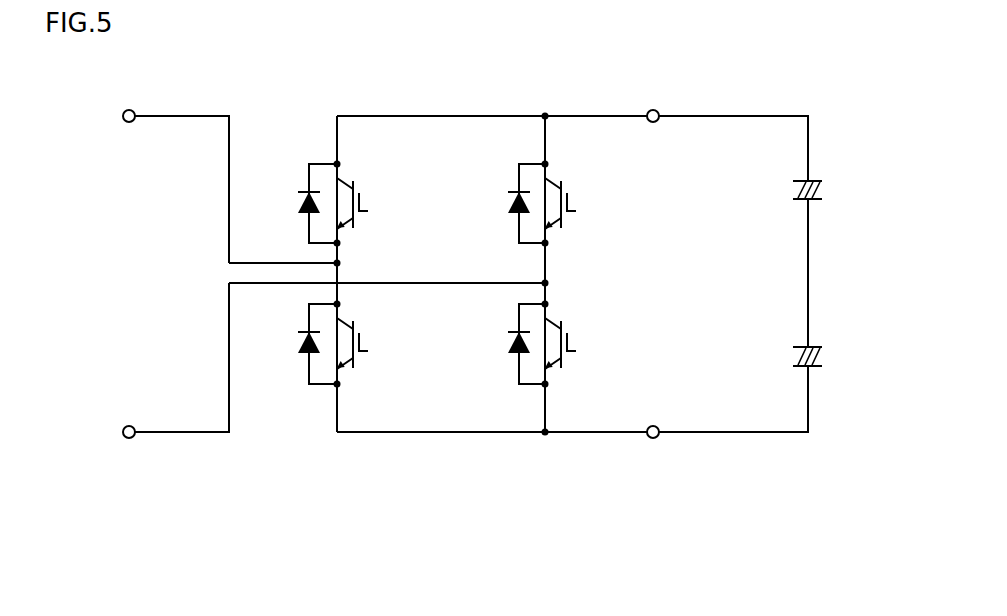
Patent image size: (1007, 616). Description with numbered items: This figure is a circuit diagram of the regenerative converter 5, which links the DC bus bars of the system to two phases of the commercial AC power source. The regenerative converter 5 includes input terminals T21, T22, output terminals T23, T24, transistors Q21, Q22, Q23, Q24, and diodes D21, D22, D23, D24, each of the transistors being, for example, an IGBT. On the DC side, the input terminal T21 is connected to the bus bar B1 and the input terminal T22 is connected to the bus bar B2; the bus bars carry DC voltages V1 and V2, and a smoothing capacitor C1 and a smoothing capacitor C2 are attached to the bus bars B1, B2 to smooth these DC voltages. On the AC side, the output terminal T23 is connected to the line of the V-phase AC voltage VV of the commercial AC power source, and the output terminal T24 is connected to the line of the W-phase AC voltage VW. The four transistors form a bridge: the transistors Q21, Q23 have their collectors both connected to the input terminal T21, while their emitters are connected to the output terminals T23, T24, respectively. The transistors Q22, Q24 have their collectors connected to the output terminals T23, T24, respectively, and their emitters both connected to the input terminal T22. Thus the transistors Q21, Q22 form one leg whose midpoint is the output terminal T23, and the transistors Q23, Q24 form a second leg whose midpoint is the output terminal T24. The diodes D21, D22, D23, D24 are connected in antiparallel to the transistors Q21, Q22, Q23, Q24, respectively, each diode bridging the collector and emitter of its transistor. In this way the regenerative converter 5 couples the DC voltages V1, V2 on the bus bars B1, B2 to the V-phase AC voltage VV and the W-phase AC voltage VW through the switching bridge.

The regenerative converter 5 is at (680, 488).
The transistor Q21 is at (372, 200).
The transistor Q22 is at (372, 340).
The transistor Q23 is at (580, 200).
The transistor Q24 is at (580, 340).
The diode D21 is at (298, 207).
The diode D22 is at (301, 358).
The diode D23 is at (507, 207).
The diode D24 is at (511, 358).
The smoothing capacitor C1 is at (815, 181).
The smoothing capacitor C2 is at (815, 348).
The input terminal T21 is at (653, 110).
The input terminal T22 is at (653, 438).
The output terminal T23 is at (129, 110).
The output terminal T24 is at (129, 438).
The bus bar B1 is at (727, 114).
The bus bar B2 is at (727, 434).
The DC voltage V1 is at (807, 101).
The DC voltage V2 is at (807, 453).
The V-phase AC voltage VV is at (86, 117).
The W-phase AC voltage VW is at (89, 433).